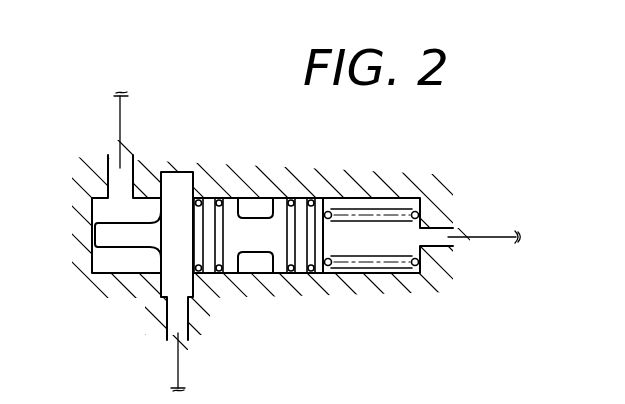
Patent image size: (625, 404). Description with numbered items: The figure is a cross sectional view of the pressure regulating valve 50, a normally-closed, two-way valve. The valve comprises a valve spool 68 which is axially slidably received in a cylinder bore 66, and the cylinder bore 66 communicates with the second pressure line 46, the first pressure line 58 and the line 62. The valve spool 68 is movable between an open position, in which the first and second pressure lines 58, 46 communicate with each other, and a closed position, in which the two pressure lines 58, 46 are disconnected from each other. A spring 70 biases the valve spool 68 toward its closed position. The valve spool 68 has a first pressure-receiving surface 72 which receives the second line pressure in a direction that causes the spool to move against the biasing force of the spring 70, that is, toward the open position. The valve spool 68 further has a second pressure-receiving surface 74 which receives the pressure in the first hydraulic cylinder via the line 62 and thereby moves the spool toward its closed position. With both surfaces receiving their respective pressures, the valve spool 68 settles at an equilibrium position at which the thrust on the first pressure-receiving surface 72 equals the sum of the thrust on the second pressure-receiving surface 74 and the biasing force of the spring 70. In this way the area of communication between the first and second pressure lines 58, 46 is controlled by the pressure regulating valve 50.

The second pressure line 46 is at (118, 120).
The pressure regulating valve 50 is at (290, 290).
The first pressure line 58 is at (178, 372).
The line 62 is at (487, 237).
The cylinder bore 66 is at (388, 198).
The valve spool 68 is at (255, 245).
The spring 70 is at (411, 265).
The first pressure-receiving surface 72 is at (150, 260).
The second pressure-receiving surface 74 is at (328, 264).